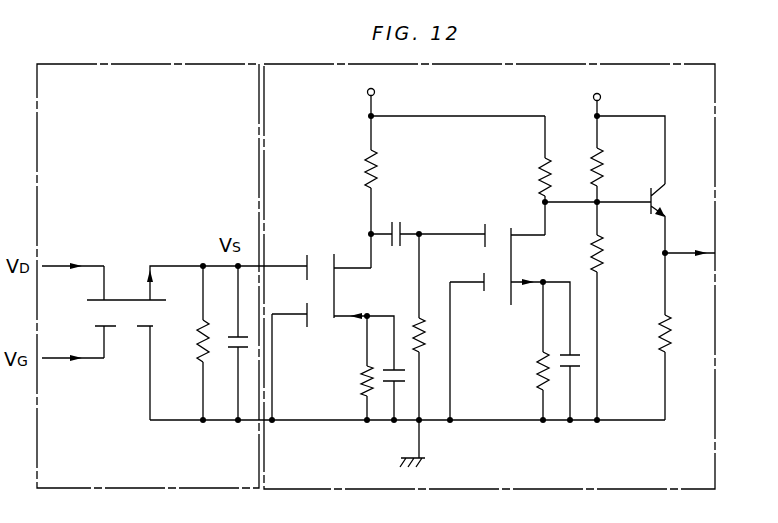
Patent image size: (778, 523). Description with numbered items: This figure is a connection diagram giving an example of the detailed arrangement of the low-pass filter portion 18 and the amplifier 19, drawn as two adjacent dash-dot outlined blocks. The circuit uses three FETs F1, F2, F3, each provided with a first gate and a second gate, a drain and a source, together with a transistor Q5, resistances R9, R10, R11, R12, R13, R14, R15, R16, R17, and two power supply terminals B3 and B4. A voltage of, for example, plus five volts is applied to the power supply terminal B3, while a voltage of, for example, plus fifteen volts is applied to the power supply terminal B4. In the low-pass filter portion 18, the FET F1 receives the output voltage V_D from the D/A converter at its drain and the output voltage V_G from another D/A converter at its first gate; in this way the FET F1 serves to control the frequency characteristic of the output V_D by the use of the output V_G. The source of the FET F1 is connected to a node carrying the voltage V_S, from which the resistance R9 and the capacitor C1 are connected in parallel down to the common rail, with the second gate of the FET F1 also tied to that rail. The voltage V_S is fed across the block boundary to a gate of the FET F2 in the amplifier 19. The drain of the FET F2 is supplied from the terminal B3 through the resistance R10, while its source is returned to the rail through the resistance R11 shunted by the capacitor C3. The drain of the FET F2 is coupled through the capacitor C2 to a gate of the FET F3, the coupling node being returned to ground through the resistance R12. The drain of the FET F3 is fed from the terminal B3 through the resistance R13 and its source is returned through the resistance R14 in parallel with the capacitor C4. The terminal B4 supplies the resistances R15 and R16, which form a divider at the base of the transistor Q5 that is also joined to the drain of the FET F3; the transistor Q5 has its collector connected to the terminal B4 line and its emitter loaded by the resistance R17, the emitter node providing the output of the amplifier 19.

The low-pass filter portion 18 is at (162, 64).
The amplifier 19 is at (672, 64).
The FET F1 is at (188, 330).
The FET F2 is at (317, 323).
The FET F3 is at (496, 309).
The resistance R9 is at (202, 348).
The resistance R10 is at (383, 179).
The resistance R11 is at (362, 374).
The resistance R12 is at (426, 341).
The resistance R13 is at (553, 182).
The resistance R14 is at (538, 357).
The resistance R15 is at (600, 156).
The resistance R16 is at (600, 251).
The resistance R17 is at (672, 322).
The capacitor C1 is at (232, 348).
The capacitor C2 is at (399, 228).
The capacitor C3 is at (389, 371).
The capacitor C4 is at (581, 368).
The transistor Q5 is at (671, 218).
The power supply terminal B3 is at (385, 91).
The power supply terminal B4 is at (596, 92).